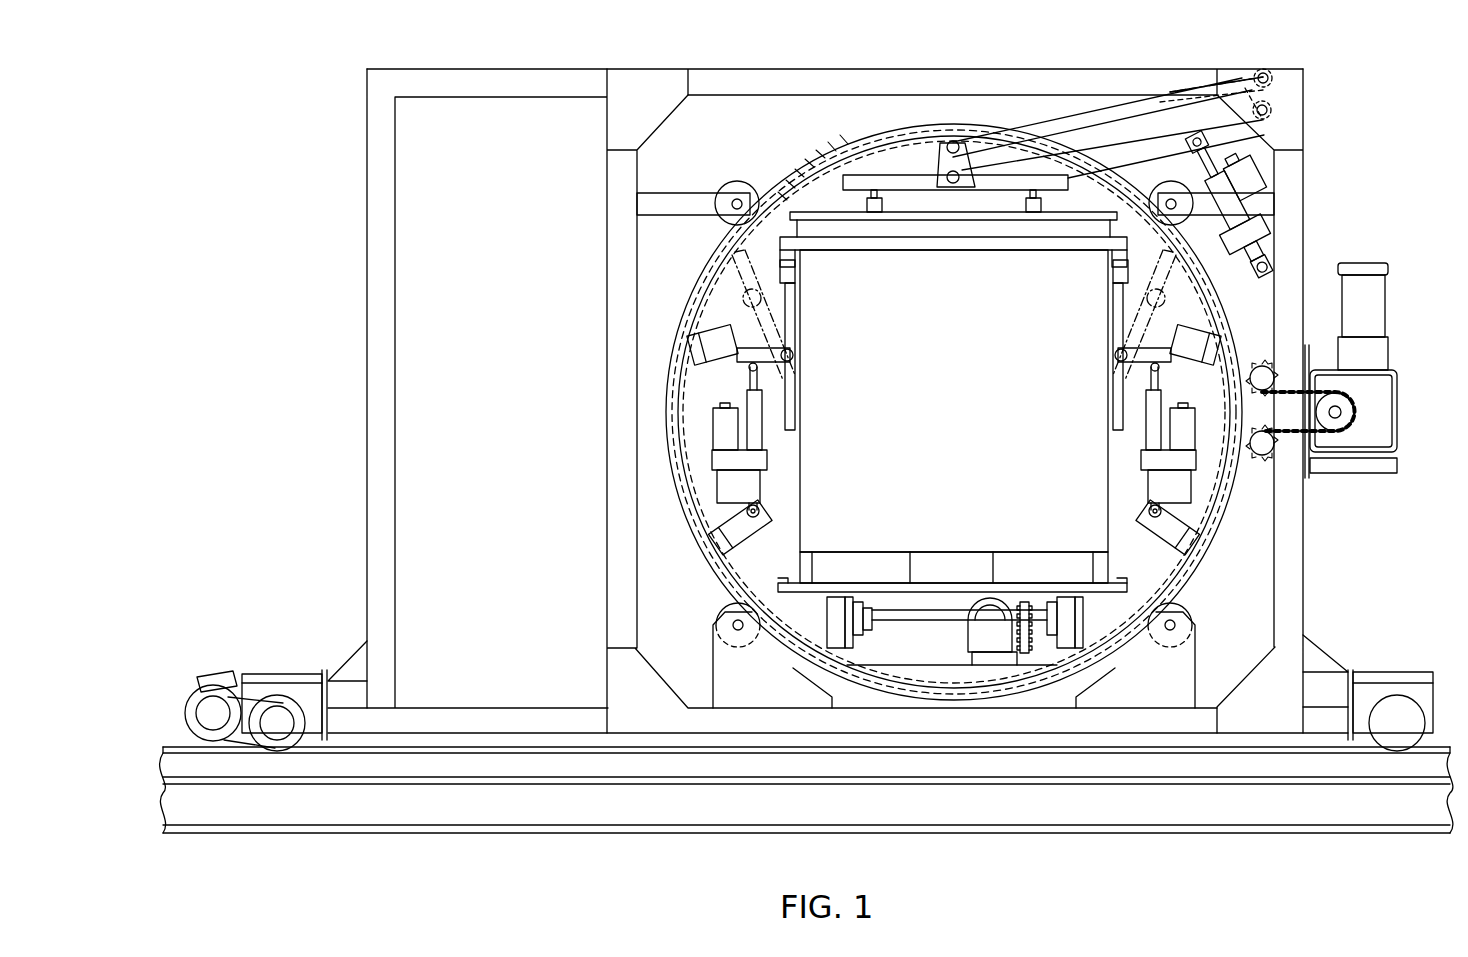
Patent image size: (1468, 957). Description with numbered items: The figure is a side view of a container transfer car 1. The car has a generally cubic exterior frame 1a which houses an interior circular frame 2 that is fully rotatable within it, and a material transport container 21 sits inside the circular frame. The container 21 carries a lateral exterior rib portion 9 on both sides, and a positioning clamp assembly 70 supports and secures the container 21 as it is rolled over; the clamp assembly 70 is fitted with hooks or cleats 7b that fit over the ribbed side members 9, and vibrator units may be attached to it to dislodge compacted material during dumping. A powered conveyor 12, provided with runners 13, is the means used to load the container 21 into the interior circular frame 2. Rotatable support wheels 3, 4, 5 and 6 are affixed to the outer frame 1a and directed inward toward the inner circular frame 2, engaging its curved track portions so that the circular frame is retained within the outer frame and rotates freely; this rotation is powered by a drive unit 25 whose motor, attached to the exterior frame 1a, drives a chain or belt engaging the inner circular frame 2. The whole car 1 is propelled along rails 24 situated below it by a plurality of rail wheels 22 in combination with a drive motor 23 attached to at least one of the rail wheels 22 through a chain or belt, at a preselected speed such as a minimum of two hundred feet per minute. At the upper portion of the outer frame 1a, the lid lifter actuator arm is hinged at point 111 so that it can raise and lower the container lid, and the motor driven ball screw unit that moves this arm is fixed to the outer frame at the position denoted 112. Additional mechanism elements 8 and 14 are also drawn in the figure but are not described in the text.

The transfer car 1 is at (837, 376).
The exterior frame 1a is at (1012, 68).
The interior circular frame 2 is at (838, 150).
The support wheel 3 is at (720, 604).
The support wheel 4 is at (722, 220).
The support wheel 5 is at (1170, 181).
The support wheel 6 is at (1178, 617).
The hooks or cleats 7b is at (1110, 290).
The clamp cylinder 8 is at (722, 428).
The lateral exterior rib portion 9 is at (795, 243).
The powered conveyor 12 is at (1024, 655).
The runners 13 is at (838, 630).
The drive motor 14 is at (1080, 650).
The material transport container 21 is at (828, 512).
The rail wheels 22 is at (274, 742).
The drive motor 23 is at (216, 675).
The rail 24 is at (185, 768).
The drive unit 25 is at (1394, 309).
The positioning clamp assembly 70 is at (1212, 455).
The hinge point 111 is at (1263, 75).
The ball screw unit fixing position 112 is at (1276, 268).